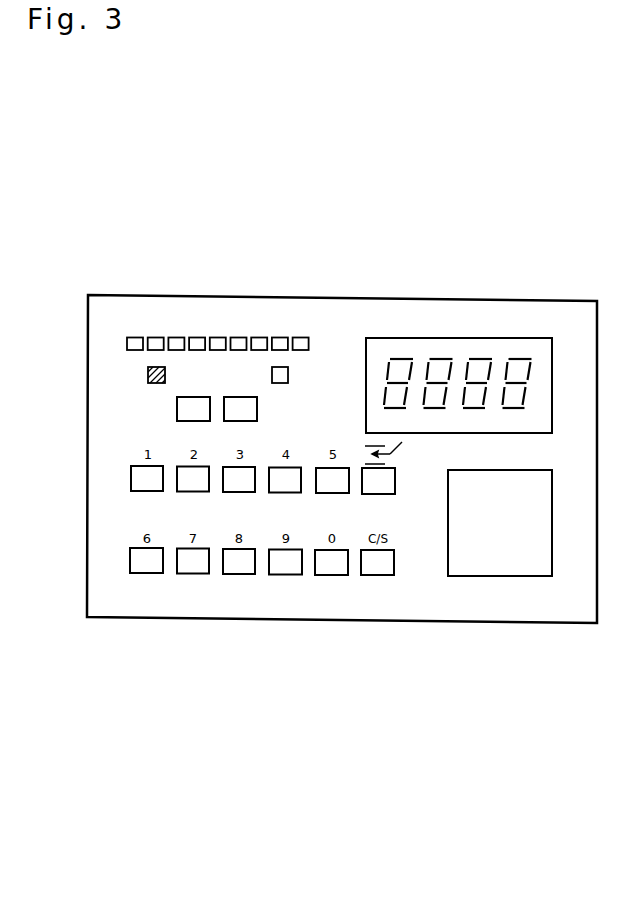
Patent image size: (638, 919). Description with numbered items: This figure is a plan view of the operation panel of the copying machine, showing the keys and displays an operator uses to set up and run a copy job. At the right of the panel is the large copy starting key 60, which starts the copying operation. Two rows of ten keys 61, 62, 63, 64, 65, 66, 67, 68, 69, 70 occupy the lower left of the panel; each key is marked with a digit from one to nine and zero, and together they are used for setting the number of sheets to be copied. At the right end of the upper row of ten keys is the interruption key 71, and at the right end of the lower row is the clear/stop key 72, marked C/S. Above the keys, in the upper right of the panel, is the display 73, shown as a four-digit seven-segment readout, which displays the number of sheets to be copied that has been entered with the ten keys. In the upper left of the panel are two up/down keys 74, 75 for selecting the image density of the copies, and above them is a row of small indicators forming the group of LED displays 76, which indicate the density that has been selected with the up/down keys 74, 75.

The copy starting key 60 is at (510, 470).
The ten key 61 is at (139, 491).
The ten key 62 is at (185, 491).
The ten key 63 is at (228, 492).
The ten key 64 is at (277, 492).
The ten key 65 is at (322, 493).
The ten key 66 is at (135, 573).
The ten key 67 is at (183, 574).
The ten key 68 is at (228, 574).
The ten key 69 is at (276, 575).
The ten key 70 is at (320, 575).
The interruption key 71 is at (395, 483).
The clear/stop key 72 is at (365, 575).
The display 73 is at (450, 338).
The up/down key 74 is at (257, 408).
The up/down key 75 is at (175, 407).
The group of LED displays 76 is at (257, 337).